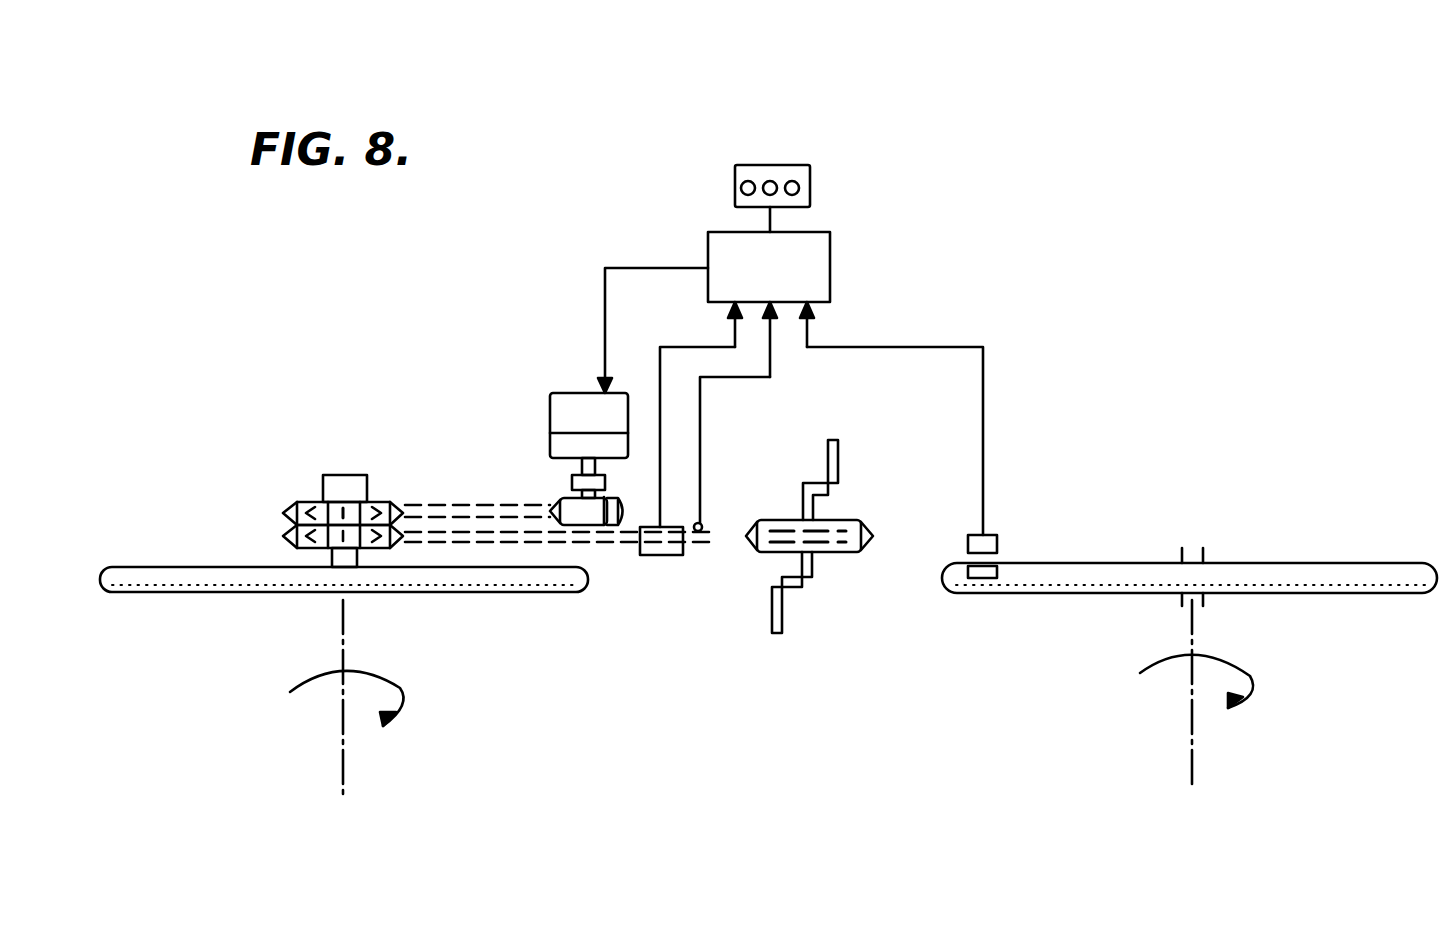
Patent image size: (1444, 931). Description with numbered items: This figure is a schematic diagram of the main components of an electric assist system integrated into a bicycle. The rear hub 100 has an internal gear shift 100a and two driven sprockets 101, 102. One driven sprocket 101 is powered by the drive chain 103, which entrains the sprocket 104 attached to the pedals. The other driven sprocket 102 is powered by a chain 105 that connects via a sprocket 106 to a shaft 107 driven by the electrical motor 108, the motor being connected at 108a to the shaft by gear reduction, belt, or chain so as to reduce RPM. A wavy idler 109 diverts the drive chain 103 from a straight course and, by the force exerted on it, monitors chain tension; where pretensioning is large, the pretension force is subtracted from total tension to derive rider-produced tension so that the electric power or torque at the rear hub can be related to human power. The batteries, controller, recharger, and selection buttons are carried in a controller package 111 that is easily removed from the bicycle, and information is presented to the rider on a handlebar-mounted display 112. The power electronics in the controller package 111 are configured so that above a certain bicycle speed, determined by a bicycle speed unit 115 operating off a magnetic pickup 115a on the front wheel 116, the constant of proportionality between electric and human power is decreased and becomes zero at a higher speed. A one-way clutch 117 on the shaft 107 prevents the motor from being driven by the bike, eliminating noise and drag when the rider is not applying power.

The rear hub 100 is at (343, 467).
The internal gear shift 100a is at (335, 510).
The driven sprocket 101 is at (297, 548).
The driven sprocket 102 is at (296, 506).
The drive chain 103 is at (423, 543).
The sprocket 104 is at (848, 525).
The chain 105 is at (425, 505).
The sprocket 106 is at (573, 515).
The shaft 107 is at (604, 525).
The electrical motor 108 is at (556, 390).
The connection 108a is at (557, 446).
The wavy idler 109 is at (662, 555).
The controller package 111 is at (795, 383).
The handlebar-mounted display 112 is at (783, 165).
The bicycle speed unit 115 is at (998, 539).
The magnetic pickup 115a is at (985, 592).
The front wheel 116 is at (1347, 578).
The one-way clutch 117 is at (572, 482).